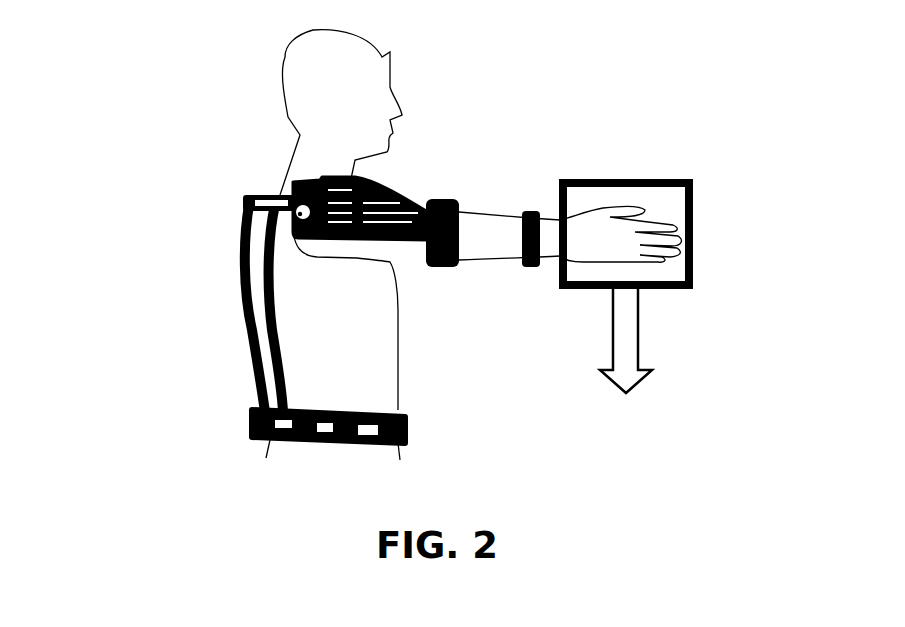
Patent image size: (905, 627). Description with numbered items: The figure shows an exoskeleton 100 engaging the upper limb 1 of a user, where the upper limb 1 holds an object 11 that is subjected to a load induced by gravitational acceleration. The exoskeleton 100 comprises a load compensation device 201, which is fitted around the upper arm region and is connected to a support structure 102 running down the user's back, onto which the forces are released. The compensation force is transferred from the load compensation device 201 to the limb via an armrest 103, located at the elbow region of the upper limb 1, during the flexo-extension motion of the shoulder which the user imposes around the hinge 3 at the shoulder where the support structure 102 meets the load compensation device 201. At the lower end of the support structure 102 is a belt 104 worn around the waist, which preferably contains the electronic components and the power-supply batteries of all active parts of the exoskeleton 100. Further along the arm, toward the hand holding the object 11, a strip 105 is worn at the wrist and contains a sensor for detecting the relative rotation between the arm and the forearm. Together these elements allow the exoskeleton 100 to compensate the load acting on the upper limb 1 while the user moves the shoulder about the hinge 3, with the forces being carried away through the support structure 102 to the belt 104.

The upper limb 1 is at (488, 212).
The hinge 3 is at (293, 205).
The object 11 is at (693, 213).
The exoskeleton 100 is at (224, 214).
The support structure 102 is at (257, 305).
The armrest 103 is at (437, 268).
The belt 104 is at (330, 442).
The strip 105 is at (531, 210).
The load compensation device 201 is at (362, 250).